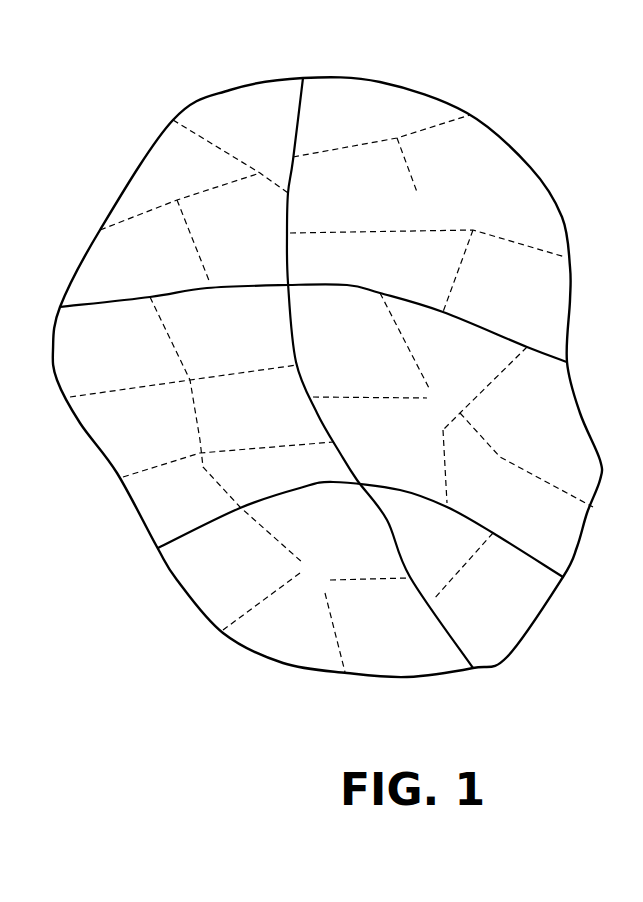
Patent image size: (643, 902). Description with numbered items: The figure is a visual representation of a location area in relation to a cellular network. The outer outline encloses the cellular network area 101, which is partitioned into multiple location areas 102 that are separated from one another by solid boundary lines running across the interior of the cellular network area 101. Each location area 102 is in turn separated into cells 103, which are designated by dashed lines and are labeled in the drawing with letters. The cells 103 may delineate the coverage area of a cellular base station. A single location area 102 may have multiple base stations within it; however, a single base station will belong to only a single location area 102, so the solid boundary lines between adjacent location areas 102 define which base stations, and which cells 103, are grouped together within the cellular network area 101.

The cellular network area 101 is at (368, 68).
The location area 102 is at (423, 190).
The cell 103 is at (513, 183).